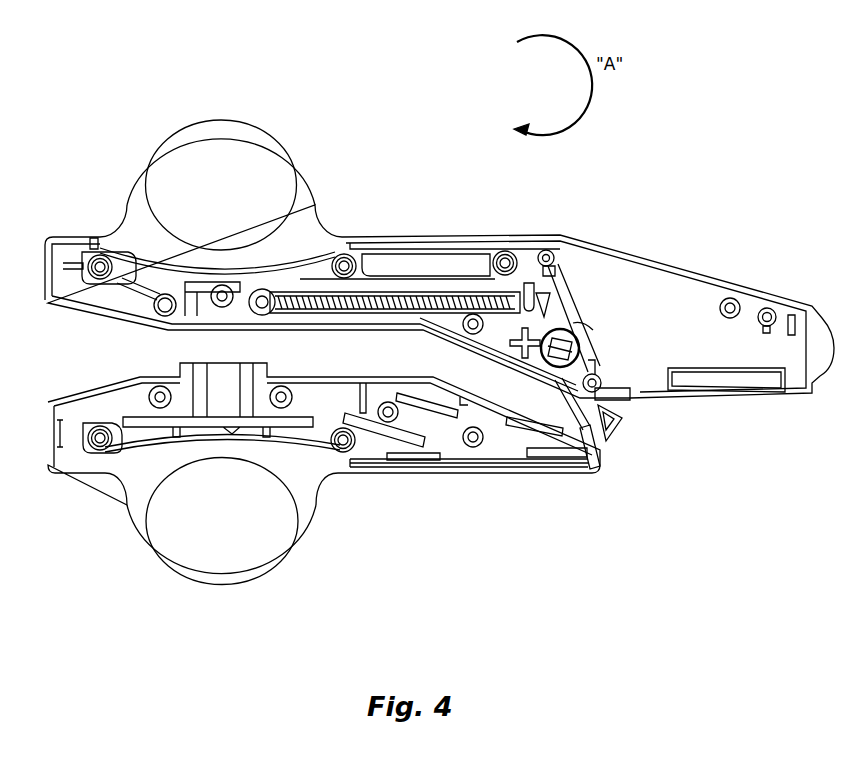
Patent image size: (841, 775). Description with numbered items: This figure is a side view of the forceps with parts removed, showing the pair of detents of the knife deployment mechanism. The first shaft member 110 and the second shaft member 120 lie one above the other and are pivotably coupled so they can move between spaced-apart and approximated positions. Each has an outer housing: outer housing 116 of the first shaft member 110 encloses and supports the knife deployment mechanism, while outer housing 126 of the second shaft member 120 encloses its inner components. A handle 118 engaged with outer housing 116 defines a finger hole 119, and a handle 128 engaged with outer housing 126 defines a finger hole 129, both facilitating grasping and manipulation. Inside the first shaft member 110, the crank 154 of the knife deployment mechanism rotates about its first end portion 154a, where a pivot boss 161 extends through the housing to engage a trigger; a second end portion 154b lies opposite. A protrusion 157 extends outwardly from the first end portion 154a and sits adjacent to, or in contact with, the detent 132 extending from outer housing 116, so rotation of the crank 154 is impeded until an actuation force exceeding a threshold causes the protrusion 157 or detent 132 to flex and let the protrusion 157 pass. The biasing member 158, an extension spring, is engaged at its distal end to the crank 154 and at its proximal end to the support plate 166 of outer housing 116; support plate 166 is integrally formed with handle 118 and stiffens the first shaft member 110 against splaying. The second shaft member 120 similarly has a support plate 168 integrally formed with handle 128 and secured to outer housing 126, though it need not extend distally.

The first shaft member 110 is at (673, 256).
The outer housing 116 is at (731, 283).
The handle 118 is at (249, 113).
The finger hole 119 is at (204, 141).
The second shaft member 120 is at (562, 482).
The outer housing 126 is at (442, 476).
The handle 128 is at (293, 572).
The finger hole 129 is at (205, 553).
The detent 132 is at (603, 397).
The crank 154 is at (574, 298).
The first end portion of crank 154a is at (578, 326).
The lever end 154b is at (530, 253).
The protrusion 157 is at (593, 434).
The biasing member 158 is at (407, 292).
The pivot boss 161 is at (531, 350).
The support plate 166 is at (370, 262).
The support plate 168 is at (118, 445).